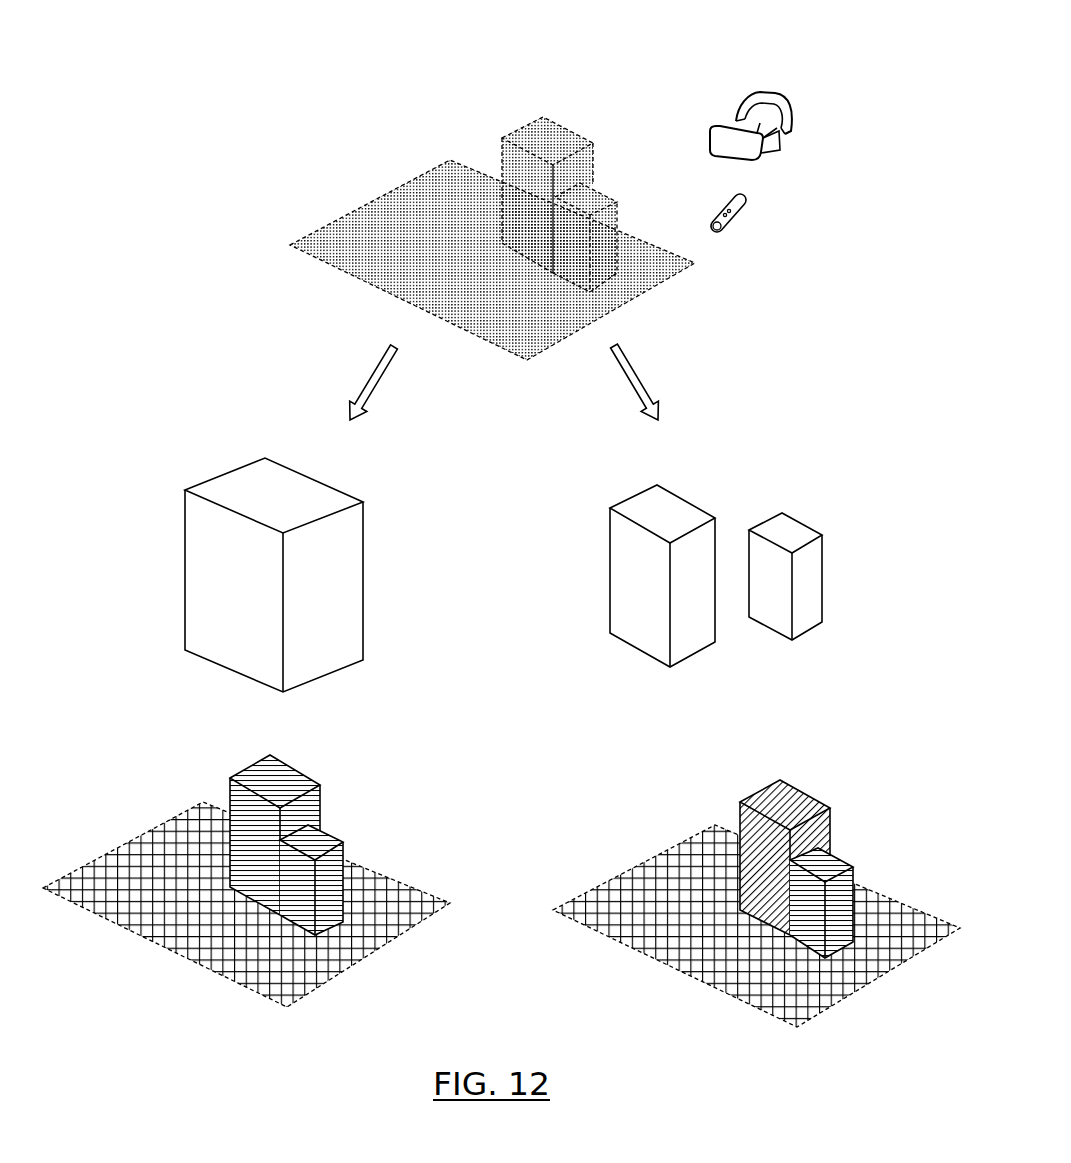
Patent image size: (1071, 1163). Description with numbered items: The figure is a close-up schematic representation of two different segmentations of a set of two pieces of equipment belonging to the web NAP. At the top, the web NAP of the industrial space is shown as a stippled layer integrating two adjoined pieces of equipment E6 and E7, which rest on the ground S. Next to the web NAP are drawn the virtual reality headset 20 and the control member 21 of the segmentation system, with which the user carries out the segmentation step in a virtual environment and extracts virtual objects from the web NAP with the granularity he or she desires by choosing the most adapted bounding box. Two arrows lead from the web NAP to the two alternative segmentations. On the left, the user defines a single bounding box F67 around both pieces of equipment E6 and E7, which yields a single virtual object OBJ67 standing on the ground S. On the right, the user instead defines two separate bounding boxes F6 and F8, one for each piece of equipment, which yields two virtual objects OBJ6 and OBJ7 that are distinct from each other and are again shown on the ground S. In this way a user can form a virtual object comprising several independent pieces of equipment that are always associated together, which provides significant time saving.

The web NAP is at (370, 218).
The piece of equipment E6 is at (553, 135).
The piece of equipment E7 is at (582, 195).
The virtual reality headset 20 is at (778, 140).
The control member 21 is at (738, 215).
The ground S is at (643, 263).
The bounding box F67 is at (277, 477).
The bounding box F6 is at (687, 508).
The shape of element 8 F8 is at (787, 523).
The virtual object OBJ67 is at (320, 825).
The virtual object OBJ6 is at (790, 805).
The virtual object OBJ7 is at (818, 863).